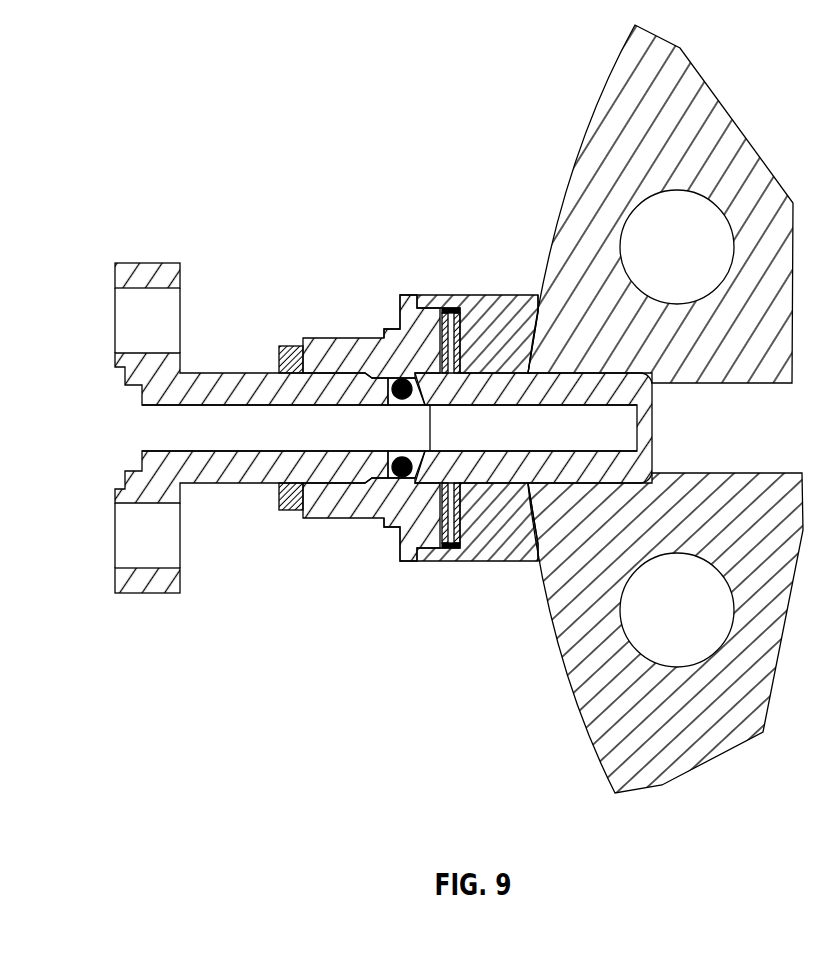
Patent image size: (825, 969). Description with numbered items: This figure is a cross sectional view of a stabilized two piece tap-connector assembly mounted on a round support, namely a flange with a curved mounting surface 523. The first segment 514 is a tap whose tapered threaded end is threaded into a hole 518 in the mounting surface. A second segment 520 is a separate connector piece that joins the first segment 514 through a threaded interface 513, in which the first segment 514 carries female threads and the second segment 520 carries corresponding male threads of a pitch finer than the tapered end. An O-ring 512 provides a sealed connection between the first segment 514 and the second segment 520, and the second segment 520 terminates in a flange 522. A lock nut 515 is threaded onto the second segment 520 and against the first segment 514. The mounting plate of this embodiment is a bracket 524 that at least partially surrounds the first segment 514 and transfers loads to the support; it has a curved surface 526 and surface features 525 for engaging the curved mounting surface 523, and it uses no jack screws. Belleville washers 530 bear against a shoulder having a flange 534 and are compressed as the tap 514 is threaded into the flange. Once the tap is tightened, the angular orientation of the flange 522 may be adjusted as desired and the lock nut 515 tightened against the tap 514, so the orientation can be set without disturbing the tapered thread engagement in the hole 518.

The O-ring 512 is at (398, 477).
The threaded interface 513 is at (330, 483).
The first segment 514 is at (333, 338).
The lock nut 515 is at (276, 346).
The hole 518 is at (592, 373).
The second segment 520 is at (228, 483).
The flange 522 is at (138, 263).
The curved mounting surface 523 is at (590, 645).
The bracket 524 is at (472, 293).
The surface features 525 is at (540, 558).
The curved surface 526 is at (531, 312).
The Belleville washers 530 is at (448, 545).
The flange 534 is at (400, 295).